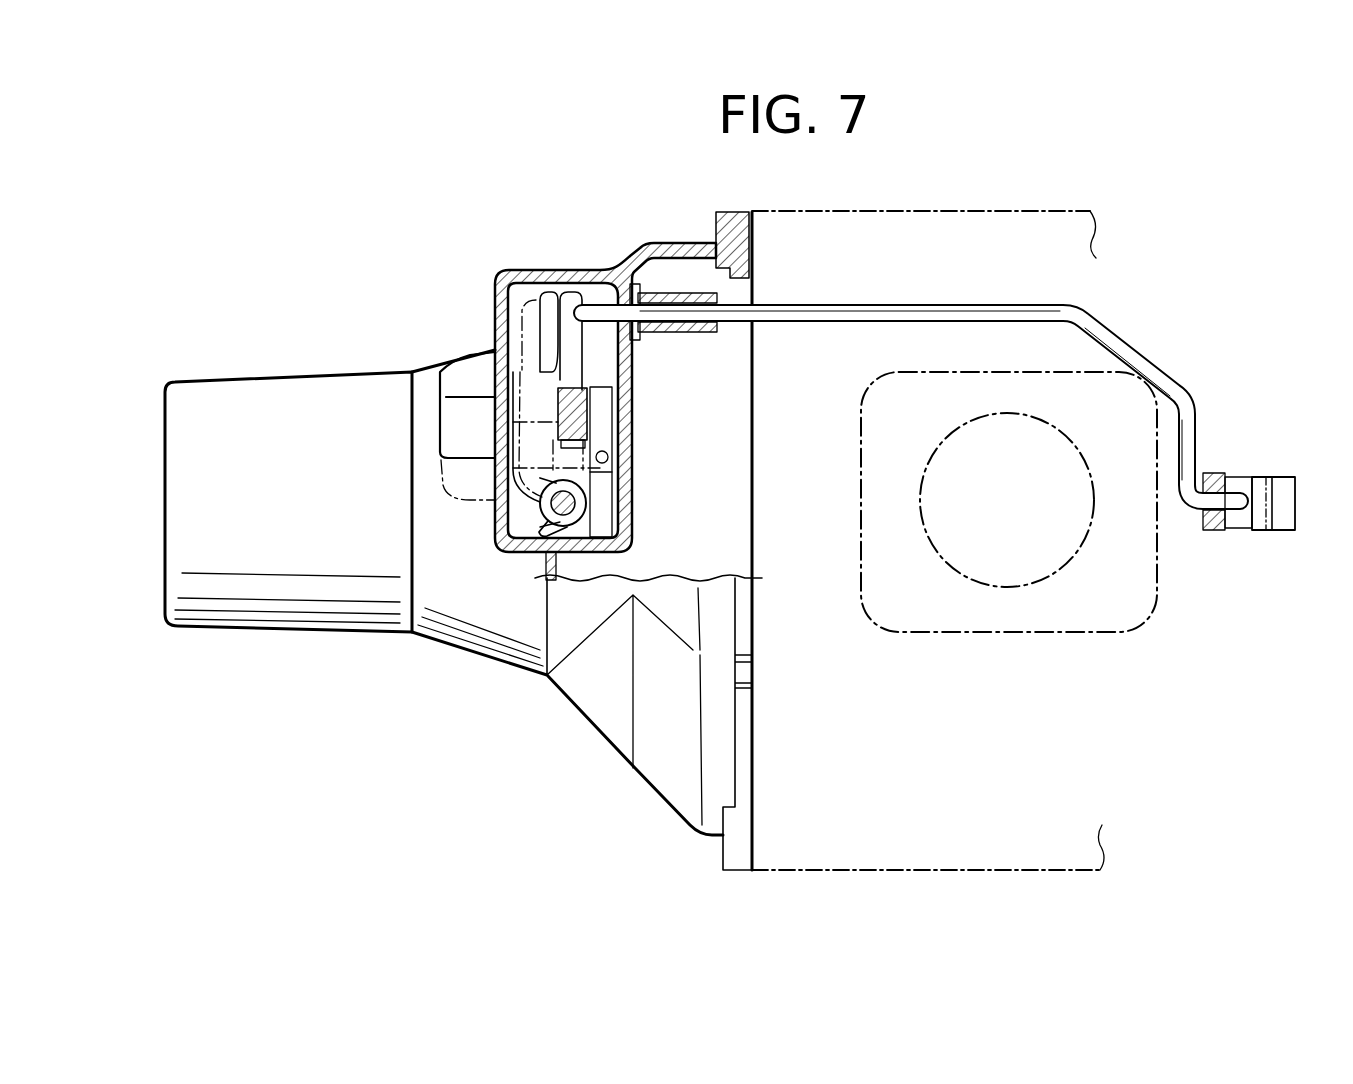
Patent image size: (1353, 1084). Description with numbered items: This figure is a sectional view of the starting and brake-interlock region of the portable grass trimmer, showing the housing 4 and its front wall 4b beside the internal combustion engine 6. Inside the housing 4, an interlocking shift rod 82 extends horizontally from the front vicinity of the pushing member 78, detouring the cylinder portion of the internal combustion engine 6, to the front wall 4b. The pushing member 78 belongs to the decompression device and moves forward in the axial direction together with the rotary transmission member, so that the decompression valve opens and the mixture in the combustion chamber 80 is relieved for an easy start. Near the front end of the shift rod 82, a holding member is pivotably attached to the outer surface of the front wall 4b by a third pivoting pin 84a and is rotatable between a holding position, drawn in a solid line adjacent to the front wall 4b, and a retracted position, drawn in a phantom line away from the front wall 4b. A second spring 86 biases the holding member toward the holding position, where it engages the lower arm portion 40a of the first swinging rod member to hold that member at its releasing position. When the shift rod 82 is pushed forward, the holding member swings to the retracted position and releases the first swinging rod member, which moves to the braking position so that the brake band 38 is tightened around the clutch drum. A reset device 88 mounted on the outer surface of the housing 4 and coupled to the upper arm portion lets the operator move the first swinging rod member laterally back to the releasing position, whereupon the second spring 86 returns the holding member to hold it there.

The housing 4 is at (607, 725).
The front wall of the housing 4b is at (640, 252).
The internal combustion engine 6 is at (1010, 632).
The brake band 38 is at (603, 523).
The lower arm portion 40a is at (588, 388).
The pushing member 78 is at (1283, 492).
The combustion chamber 80 is at (1050, 540).
The shift rod 82 is at (1135, 343).
The third pivoting pin 84a is at (540, 527).
The second spring 86 is at (577, 513).
The reset device 88 is at (470, 378).